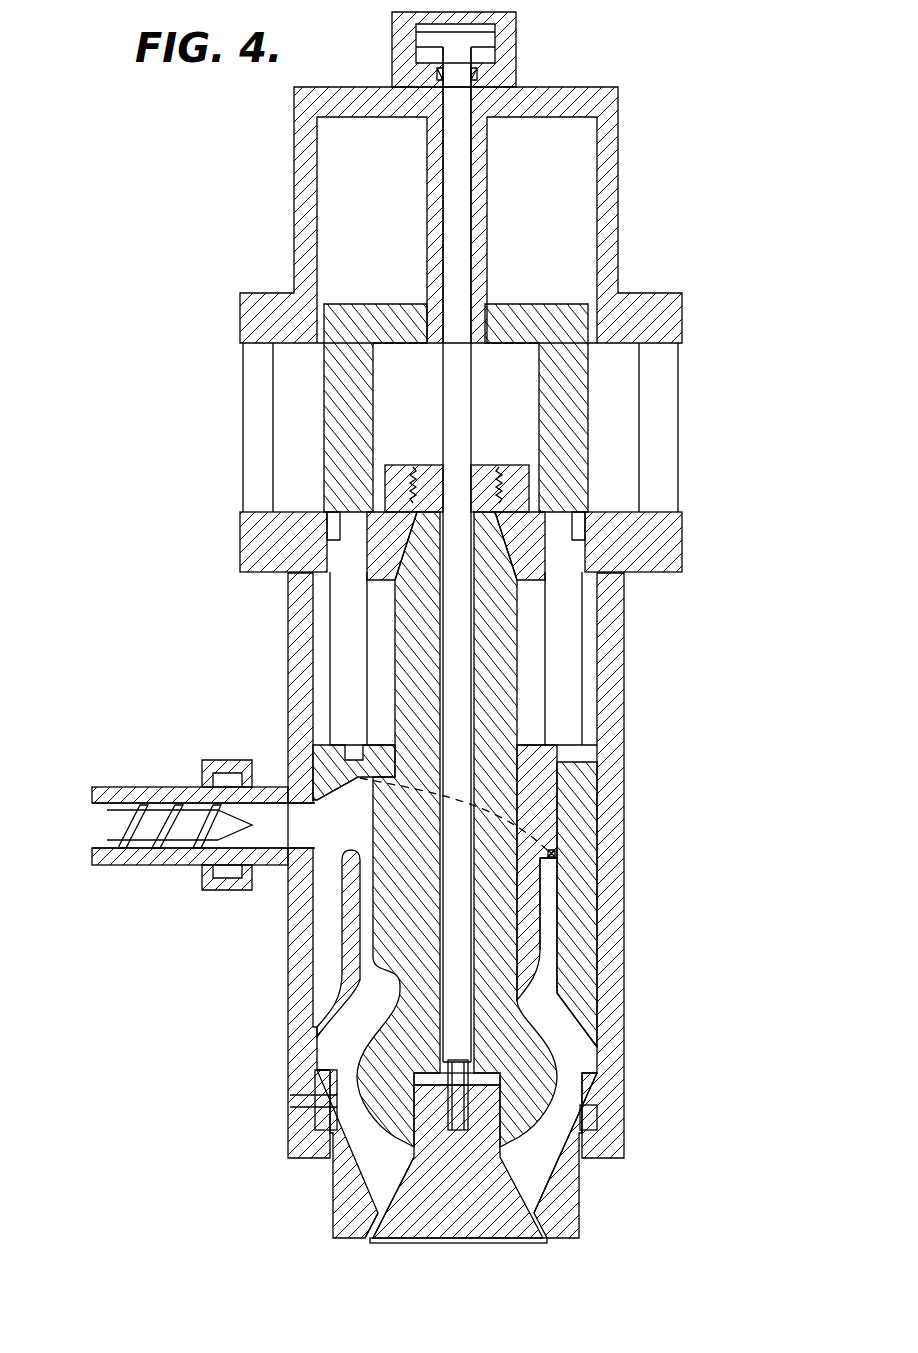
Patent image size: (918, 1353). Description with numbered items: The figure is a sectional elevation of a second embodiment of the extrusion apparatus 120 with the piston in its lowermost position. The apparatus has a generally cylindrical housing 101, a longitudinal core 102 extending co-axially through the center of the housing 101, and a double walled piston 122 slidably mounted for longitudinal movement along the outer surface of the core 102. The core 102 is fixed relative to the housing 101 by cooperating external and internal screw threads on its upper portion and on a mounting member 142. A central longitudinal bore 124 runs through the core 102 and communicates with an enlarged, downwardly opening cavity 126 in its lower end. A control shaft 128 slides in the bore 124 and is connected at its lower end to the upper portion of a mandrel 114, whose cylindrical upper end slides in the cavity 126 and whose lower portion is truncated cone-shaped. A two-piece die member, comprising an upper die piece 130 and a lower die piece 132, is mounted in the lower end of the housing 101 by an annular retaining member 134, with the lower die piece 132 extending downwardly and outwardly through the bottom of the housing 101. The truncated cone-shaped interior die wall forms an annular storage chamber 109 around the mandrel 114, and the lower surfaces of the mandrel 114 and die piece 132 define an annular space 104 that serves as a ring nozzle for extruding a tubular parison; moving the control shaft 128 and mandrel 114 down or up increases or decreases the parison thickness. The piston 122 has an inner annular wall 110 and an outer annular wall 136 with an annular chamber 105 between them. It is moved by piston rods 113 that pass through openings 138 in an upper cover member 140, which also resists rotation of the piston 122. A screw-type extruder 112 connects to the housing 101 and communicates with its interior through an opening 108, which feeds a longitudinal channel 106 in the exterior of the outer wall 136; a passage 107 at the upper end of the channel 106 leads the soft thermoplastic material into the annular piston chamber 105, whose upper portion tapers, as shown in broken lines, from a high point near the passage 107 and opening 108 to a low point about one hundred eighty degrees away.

The cylindrical housing 101 is at (606, 702).
The longitudinal core 102 is at (405, 665).
The annular space 104 is at (372, 1236).
The annular chamber 105 is at (550, 908).
The longitudinal channel 106 is at (325, 962).
The passage 107 is at (337, 808).
The opening 108 is at (300, 838).
The annular storage chamber 109 is at (572, 1075).
The inner annular wall 110 is at (535, 955).
The screw-type extruder 112 is at (140, 788).
The piston rods 113 is at (345, 596).
The mandrel 114 is at (497, 1222).
The extrusion apparatus 120 is at (712, 628).
The double walled piston 122 is at (600, 772).
The central longitudinal bore 124 is at (442, 468).
The cavity 126 is at (420, 1112).
The control shaft 128 is at (470, 387).
The upper die piece 130 is at (318, 1098).
The lower die piece 132 is at (340, 1190).
The annular retaining member 134 is at (612, 1147).
The outer annular wall 136 is at (582, 834).
The openings 138 is at (330, 530).
The upper cover member 140 is at (250, 540).
The mounting member 142 is at (516, 446).